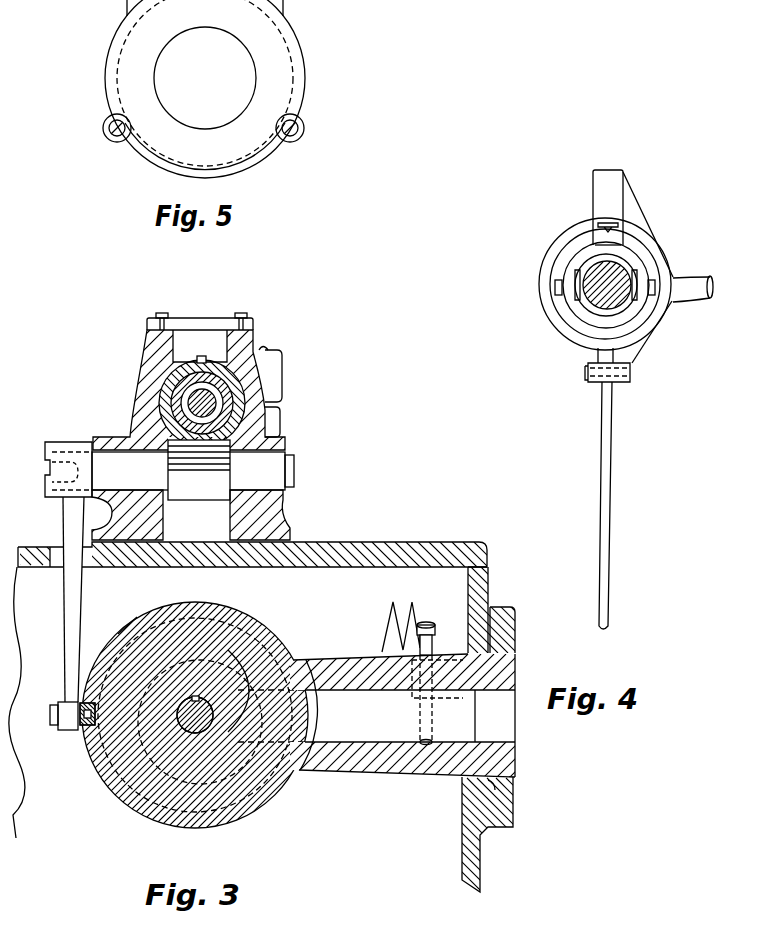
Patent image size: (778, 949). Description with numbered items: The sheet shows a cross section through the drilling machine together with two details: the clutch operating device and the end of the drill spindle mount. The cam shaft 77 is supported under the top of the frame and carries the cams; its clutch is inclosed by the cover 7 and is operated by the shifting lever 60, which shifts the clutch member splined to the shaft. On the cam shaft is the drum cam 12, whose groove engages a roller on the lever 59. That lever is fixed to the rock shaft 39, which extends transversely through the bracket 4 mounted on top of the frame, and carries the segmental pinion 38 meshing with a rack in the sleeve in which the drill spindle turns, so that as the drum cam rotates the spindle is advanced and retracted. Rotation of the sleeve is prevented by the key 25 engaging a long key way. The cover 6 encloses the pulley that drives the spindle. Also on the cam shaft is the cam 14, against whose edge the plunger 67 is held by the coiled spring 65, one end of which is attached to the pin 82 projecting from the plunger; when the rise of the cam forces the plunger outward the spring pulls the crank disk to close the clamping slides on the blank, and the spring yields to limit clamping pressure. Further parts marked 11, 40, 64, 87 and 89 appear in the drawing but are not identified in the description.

In FIG. 3, the bracket 4 is at (272, 512).
In FIG. 5, the cover 6 is at (302, 72).
In FIG. 4, the cover 7 is at (564, 232).
In FIG. 3, the frame wall 11 is at (503, 797).
In FIG. 3, the drum cam 12 is at (106, 788).
In FIG. 3, the cam 14 is at (143, 758).
In FIG. 3, the key 25 is at (201, 355).
In FIG. 3, the segmental pinion 38 is at (208, 500).
In FIG. 3, the rock shaft 39 is at (294, 460).
In FIG. 3, the boss 40 is at (269, 349).
In FIG. 3, the lever 59 is at (73, 600).
In FIG. 4, the shifting lever 60 is at (612, 455).
In FIG. 4, the clamp block 64 is at (588, 375).
In FIG. 3, the coiled spring 65 is at (392, 610).
In FIG. 3, the plunger 67 is at (262, 672).
In FIG. 3, the cam shaft 77 is at (208, 728).
In FIG. 3, the pin 82 is at (432, 645).
In FIG. 3, the pivot pin 87 is at (86, 727).
In FIG. 3, the nut 89 is at (50, 718).